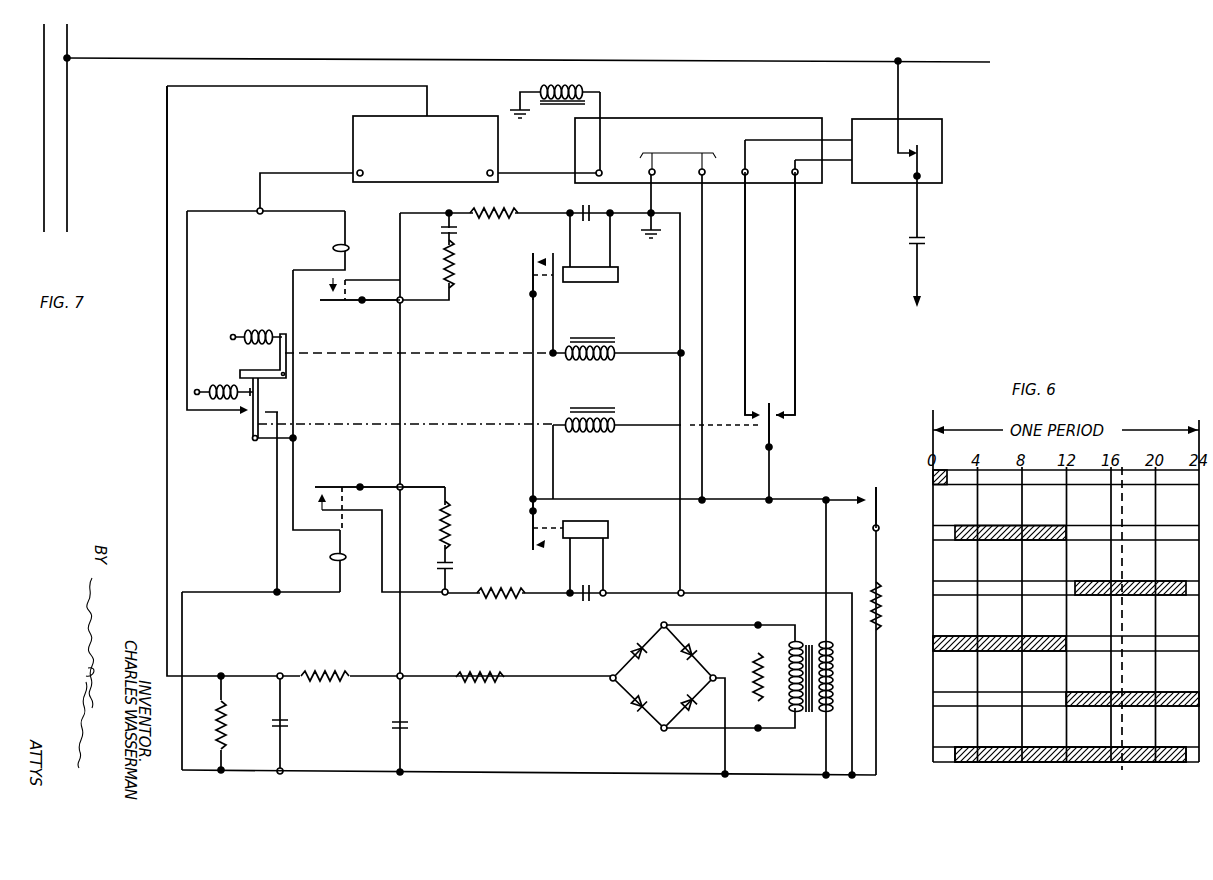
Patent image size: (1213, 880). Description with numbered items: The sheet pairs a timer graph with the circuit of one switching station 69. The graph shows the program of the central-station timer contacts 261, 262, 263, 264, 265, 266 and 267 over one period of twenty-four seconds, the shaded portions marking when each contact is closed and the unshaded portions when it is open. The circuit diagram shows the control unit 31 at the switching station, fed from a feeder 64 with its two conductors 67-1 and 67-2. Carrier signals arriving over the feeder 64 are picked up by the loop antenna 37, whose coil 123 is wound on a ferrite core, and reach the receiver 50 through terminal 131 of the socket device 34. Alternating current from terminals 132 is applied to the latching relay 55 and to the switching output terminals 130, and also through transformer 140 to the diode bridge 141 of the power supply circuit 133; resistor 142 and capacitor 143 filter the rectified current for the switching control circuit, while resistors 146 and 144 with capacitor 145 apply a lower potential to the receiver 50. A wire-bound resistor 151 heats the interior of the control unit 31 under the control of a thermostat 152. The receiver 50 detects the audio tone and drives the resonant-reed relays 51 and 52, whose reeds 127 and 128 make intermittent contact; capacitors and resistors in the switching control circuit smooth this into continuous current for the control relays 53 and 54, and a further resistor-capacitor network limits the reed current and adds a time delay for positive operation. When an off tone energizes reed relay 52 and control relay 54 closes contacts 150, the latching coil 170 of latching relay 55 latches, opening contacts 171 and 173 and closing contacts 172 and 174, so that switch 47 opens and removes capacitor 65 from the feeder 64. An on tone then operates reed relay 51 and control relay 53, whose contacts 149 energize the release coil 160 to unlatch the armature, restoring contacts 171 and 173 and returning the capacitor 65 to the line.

In FIG. 7, the feeder 64 is at (322, 63).
In FIG. 7, the power line conductor 67-1 is at (67, 152).
In FIG. 7, the power line conductor 67-2 is at (44, 172).
In FIG. 7, the switching station 69 is at (150, 129).
In FIG. 7, the receiver 50 is at (378, 126).
In FIG. 7, the loop antenna 37 is at (533, 89).
In FIG. 7, the coil 123 is at (588, 90).
In FIG. 7, the socket device 34 is at (752, 113).
In FIG. 7, the switch 47 is at (958, 96).
In FIG. 7, the capacitor 65 is at (906, 246).
In FIG. 7, the terminal 131 is at (601, 171).
In FIG. 7, the terminals 132 is at (700, 172).
In FIG. 7, the switching output terminals 130 is at (793, 172).
In FIG. 7, the resonant-reed relay 51 is at (348, 249).
In FIG. 7, the resonant-reed relay 52 is at (345, 557).
In FIG. 7, the resonant-reed 127 is at (337, 304).
In FIG. 7, the resonant-reed 128 is at (323, 486).
In FIG. 7, the contacts 149 is at (548, 259).
In FIG. 7, the contacts 150 is at (539, 549).
In FIG. 7, the control relay 53 is at (618, 280).
In FIG. 7, the control relay 54 is at (600, 539).
In FIG. 7, the latching relay 55 is at (597, 396).
In FIG. 7, the release coil 160 is at (602, 360).
In FIG. 7, the latching coil 170 is at (604, 432).
In FIG. 7, the contacts 172 is at (268, 411).
In FIG. 7, the contacts 171 is at (246, 412).
In FIG. 7, the contacts 174 is at (758, 422).
In FIG. 7, the contacts 173 is at (777, 418).
In FIG. 7, the control unit 31 is at (812, 356).
In FIG. 7, the thermostat 152 is at (876, 490).
In FIG. 7, the wire-bound resistor 151 is at (870, 602).
In FIG. 7, the resistor 144 is at (324, 674).
In FIG. 7, the resistor 146 is at (230, 728).
In FIG. 7, the capacitor 145 is at (292, 722).
In FIG. 7, the capacitor 143 is at (409, 722).
In FIG. 7, the resistor 142 is at (467, 676).
In FIG. 7, the diode bridge 141 is at (630, 671).
In FIG. 7, the transformer 140 is at (810, 730).
In FIG. 7, the power supply circuit 133 is at (565, 752).
In FIG. 6, the timer contact 261 is at (1066, 498).
In FIG. 6, the timer contact 262 is at (1066, 554).
In FIG. 6, the timer contact 263 is at (1066, 608).
In FIG. 6, the timer contact 264 is at (1066, 664).
In FIG. 6, the timer contact 265 is at (1066, 719).
In FIG. 6, the timer contact 266 is at (1066, 769).
In FIG. 6, the timer contact 267 is at (1070, 779).